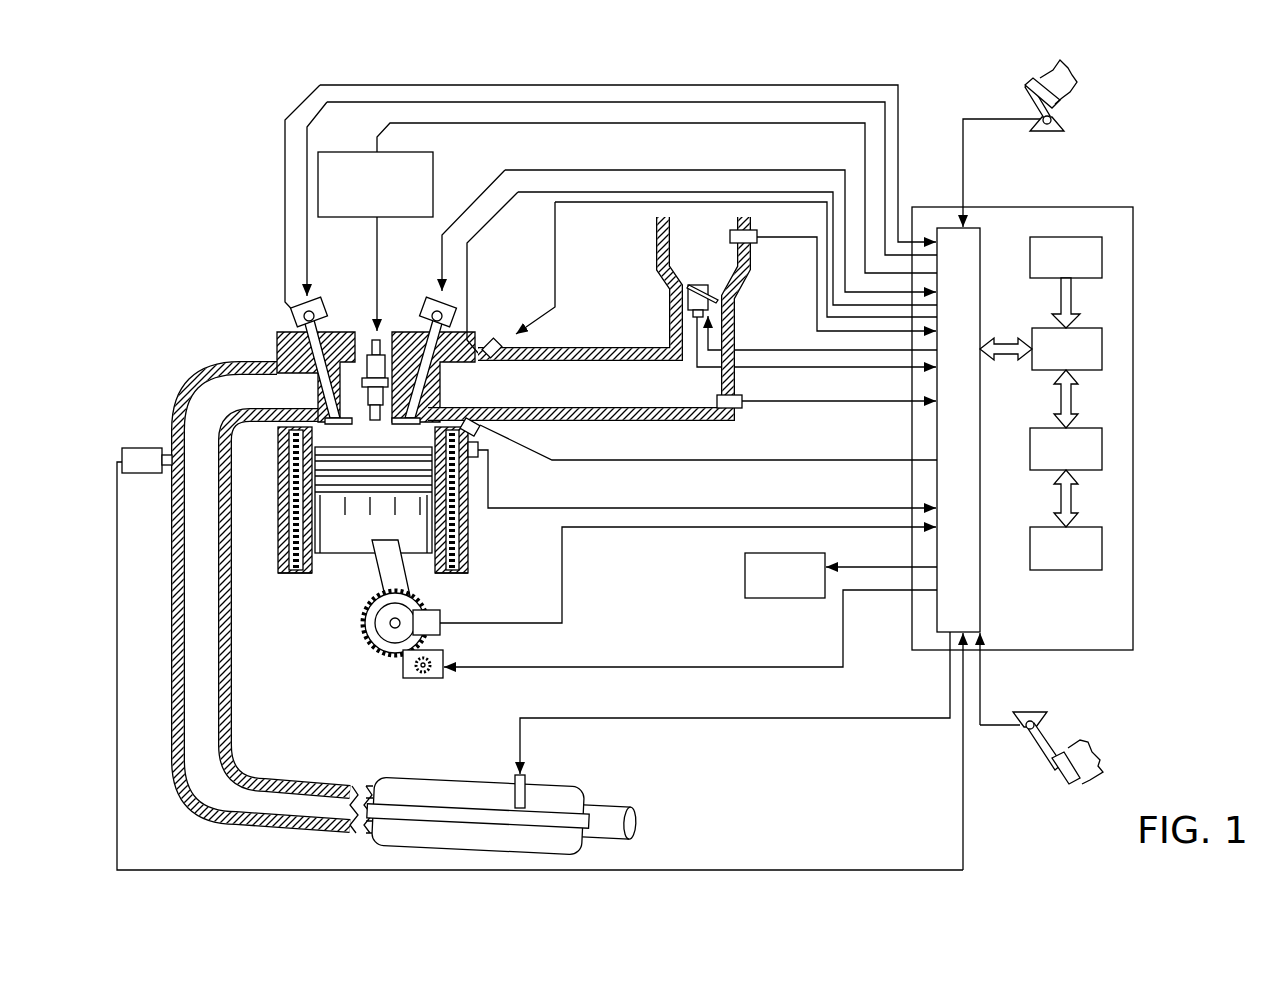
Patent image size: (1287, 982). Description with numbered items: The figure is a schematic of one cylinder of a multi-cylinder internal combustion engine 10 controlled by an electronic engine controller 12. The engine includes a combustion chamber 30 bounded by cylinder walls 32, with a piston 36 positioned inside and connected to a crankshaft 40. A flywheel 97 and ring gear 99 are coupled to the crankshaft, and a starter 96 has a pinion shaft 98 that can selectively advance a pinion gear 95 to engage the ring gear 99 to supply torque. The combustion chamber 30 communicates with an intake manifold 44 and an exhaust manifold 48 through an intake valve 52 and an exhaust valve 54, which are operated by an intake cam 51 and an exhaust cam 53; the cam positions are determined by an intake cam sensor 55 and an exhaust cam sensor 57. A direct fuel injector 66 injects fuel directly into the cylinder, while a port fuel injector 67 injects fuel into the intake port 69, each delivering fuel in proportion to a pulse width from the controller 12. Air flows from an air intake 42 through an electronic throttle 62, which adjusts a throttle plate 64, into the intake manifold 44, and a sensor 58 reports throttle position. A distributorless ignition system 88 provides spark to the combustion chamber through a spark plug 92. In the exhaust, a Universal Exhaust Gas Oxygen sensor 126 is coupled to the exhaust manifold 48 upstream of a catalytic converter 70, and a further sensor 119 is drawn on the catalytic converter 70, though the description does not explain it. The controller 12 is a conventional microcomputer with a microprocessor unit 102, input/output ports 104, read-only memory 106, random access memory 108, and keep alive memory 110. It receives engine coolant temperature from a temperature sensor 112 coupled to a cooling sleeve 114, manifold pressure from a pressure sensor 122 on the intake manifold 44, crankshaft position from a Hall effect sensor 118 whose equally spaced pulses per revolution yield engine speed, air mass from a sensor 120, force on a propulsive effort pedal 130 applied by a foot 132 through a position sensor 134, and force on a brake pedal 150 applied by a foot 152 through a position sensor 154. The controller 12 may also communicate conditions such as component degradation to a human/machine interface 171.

The internal combustion engine 10 is at (213, 290).
The electronic engine controller 12 is at (1133, 207).
The combustion chamber 30 is at (292, 530).
The cylinder walls 32 is at (312, 583).
The piston 36 is at (362, 560).
The crankshaft 40 is at (380, 640).
The air intake 42 is at (688, 261).
The intake manifold 44 is at (625, 398).
The exhaust manifold 48 is at (233, 402).
The intake cam 51 is at (430, 300).
The intake valve 52 is at (422, 415).
The exhaust cam 53 is at (318, 300).
The exhaust valve 54 is at (318, 395).
The intake cam sensor 55 is at (452, 324).
The exhaust cam sensor 57 is at (305, 322).
The throttle position sensor 58 is at (672, 316).
The electronic throttle 62 is at (717, 297).
The throttle plate 64 is at (688, 293).
The direct fuel injector 66 is at (472, 430).
The port fuel injector 67 is at (498, 340).
The intake port 69 is at (455, 402).
The catalytic converter 70 is at (392, 780).
The distributorless ignition system 88 is at (333, 152).
The spark plug 92 is at (382, 340).
The pinion gear 95 is at (425, 680).
The starter 96 is at (443, 672).
The flywheel 97 is at (365, 630).
The pinion shaft 98 is at (412, 672).
The ring gear 99 is at (390, 655).
The microprocessor unit 102 is at (1102, 345).
The input/output ports 104 is at (983, 237).
The read-only memory 106 is at (1102, 255).
The random access memory 108 is at (1102, 445).
The keep alive memory 110 is at (1102, 545).
The temperature sensor 112 is at (490, 465).
The cooling sleeve 114 is at (458, 530).
The Hall effect sensor 118 is at (440, 612).
The exhaust temperature sensor 119 is at (527, 782).
The air mass sensor 120 is at (755, 243).
The pressure sensor 122 is at (742, 408).
The Universal Exhaust Gas Oxygen sensor 126 is at (122, 455).
The propulsive effort pedal 130 is at (1032, 95).
The foot 132 is at (1075, 85).
The position sensor 134 is at (1065, 120).
The brake pedal 150 is at (1052, 768).
The foot 152 is at (1085, 740).
The position sensor 154 is at (1020, 716).
The human/machine interface 171 is at (785, 575).